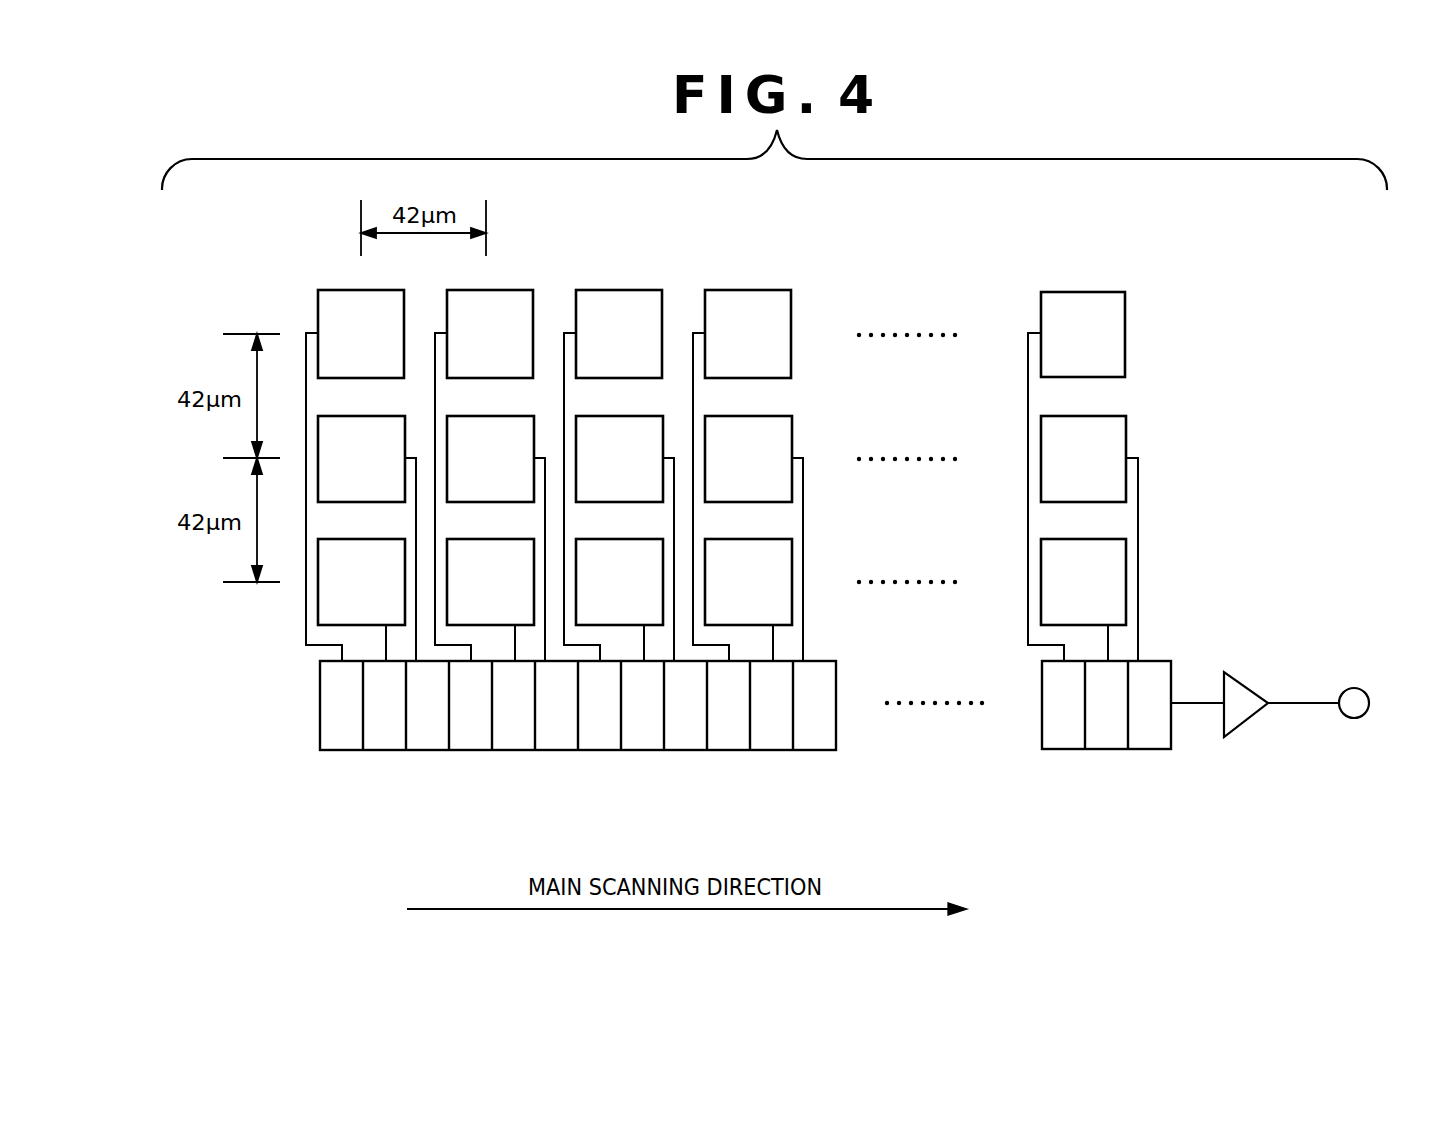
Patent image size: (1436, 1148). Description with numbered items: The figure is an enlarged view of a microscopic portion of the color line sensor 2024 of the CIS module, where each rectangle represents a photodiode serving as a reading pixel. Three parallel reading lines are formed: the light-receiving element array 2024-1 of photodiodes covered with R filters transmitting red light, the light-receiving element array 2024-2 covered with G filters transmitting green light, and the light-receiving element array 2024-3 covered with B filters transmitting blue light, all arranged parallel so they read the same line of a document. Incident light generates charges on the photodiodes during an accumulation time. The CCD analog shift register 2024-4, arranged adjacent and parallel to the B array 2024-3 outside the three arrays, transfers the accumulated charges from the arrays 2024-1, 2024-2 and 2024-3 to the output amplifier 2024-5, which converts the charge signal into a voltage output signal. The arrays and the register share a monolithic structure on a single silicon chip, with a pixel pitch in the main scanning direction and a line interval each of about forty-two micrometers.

The color line sensor 2024 is at (808, 285).
The light-receiving element array 2024-1 is at (1125, 313).
The light-receiving element array 2024-2 is at (1126, 437).
The light-receiving element array 2024-3 is at (1126, 560).
The CCD analog shift register 2024-4 is at (770, 740).
The output amplifier 2024-5 is at (1240, 722).